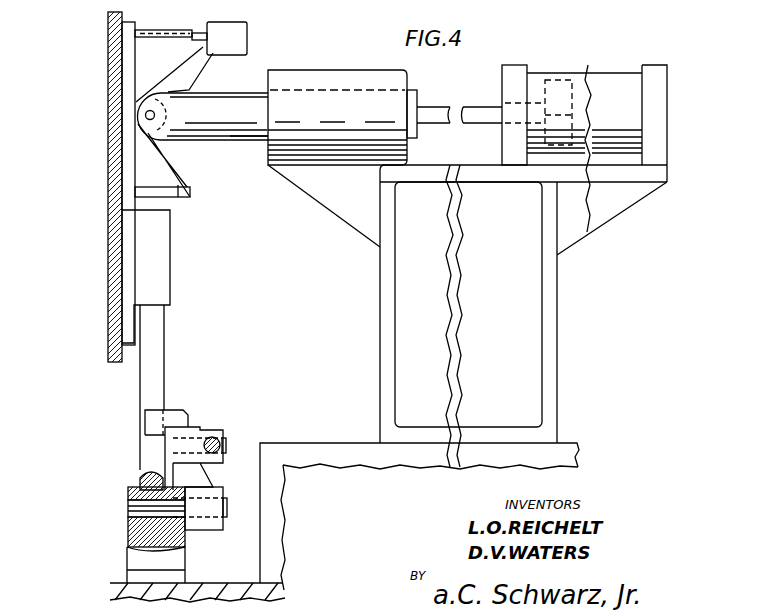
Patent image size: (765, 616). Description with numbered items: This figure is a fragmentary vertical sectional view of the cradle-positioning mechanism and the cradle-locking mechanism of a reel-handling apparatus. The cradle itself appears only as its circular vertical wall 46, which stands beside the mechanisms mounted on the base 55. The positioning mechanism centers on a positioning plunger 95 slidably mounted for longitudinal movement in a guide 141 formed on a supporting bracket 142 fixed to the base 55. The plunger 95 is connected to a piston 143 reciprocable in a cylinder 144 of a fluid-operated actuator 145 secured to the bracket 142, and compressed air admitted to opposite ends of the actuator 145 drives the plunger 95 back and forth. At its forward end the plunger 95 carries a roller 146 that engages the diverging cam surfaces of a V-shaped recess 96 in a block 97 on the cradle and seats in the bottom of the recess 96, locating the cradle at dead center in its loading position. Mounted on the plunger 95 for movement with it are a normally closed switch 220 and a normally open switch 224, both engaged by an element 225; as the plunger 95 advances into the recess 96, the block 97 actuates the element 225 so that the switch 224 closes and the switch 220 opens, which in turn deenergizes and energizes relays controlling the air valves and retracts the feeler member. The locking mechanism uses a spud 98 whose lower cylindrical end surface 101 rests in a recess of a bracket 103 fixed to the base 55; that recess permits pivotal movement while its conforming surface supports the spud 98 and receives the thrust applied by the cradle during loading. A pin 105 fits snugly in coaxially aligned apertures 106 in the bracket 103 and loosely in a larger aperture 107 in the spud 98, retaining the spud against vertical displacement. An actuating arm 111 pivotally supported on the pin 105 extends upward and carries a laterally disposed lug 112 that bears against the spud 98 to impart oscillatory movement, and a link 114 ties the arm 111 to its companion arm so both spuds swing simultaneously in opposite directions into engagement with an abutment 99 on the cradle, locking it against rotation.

The vertical wall 46 is at (108, 360).
The base 55 is at (110, 590).
The positioning plunger 95 is at (248, 137).
The V-shaped recess 96 is at (177, 161).
The block 97 is at (178, 197).
The spud 98 is at (162, 367).
The abutment 99 is at (148, 307).
The cylindrical end surface 101 is at (128, 533).
The bracket 103 is at (140, 557).
The pin 105 is at (128, 507).
The aperture 106 is at (183, 502).
The aperture 107 is at (140, 478).
The actuating arm 111 is at (183, 430).
The lug 112 is at (162, 408).
The link 114 is at (224, 440).
The guide 141 is at (322, 74).
The supporting bracket 142 is at (380, 310).
The piston 143 is at (560, 80).
The cylinder 144 is at (612, 72).
The fluid-operated actuator 145 is at (594, 59).
The roller 146 is at (167, 110).
The normally closed switch 220 is at (233, 22).
The normally open switch 224 is at (245, 38).
The element 225 is at (197, 32).